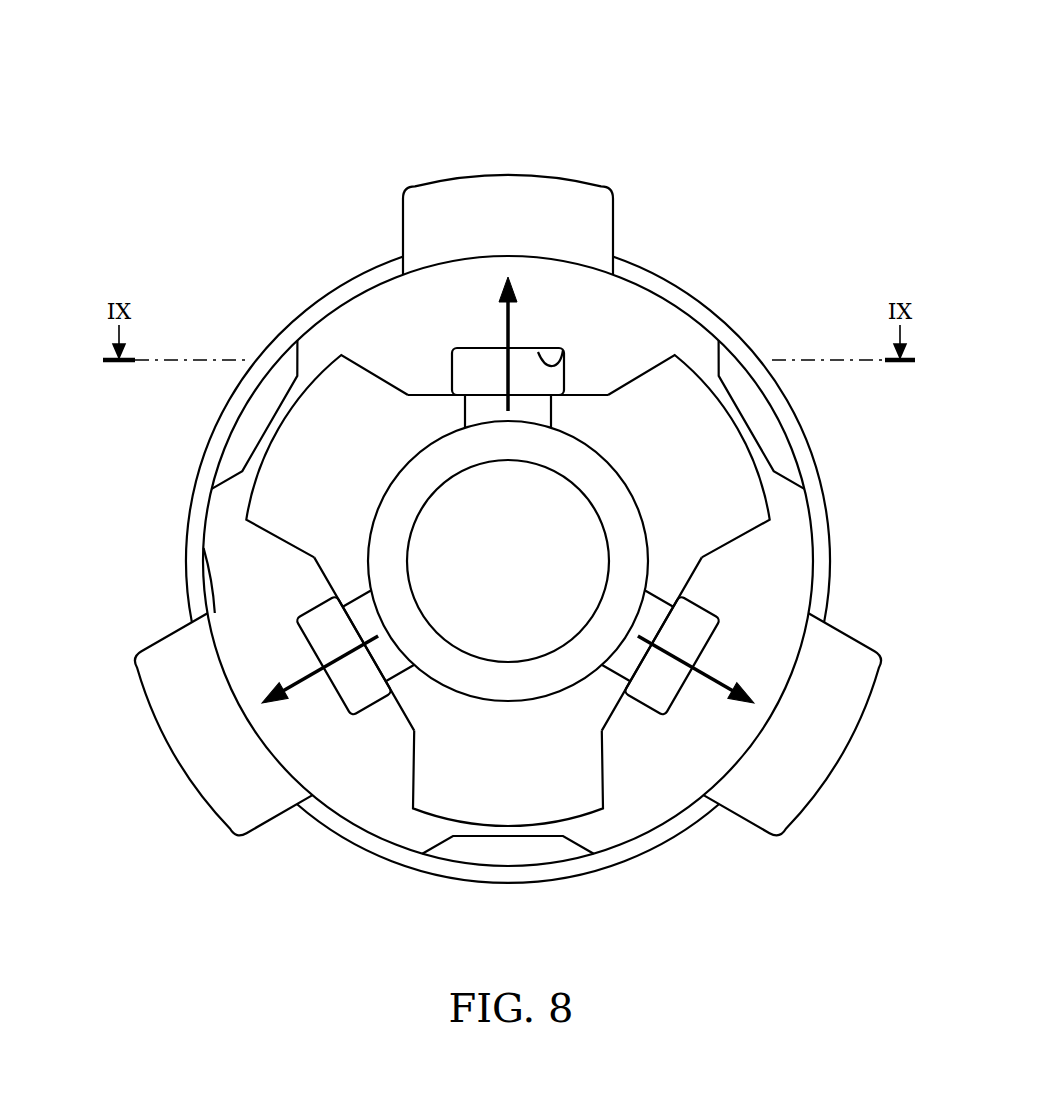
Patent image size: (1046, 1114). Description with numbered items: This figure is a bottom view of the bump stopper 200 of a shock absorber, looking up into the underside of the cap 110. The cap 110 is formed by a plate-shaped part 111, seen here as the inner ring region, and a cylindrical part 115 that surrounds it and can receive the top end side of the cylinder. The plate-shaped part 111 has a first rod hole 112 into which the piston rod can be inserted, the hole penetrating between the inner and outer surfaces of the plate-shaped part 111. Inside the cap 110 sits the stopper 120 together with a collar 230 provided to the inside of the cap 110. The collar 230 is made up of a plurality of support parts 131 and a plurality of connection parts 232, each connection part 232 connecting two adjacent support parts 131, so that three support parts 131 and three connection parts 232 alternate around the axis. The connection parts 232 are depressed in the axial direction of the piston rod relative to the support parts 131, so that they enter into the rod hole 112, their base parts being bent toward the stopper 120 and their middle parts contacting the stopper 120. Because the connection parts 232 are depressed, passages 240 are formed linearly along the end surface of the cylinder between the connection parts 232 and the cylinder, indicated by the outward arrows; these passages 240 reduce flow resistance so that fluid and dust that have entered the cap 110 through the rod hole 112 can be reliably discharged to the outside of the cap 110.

The bump stopper 200 is at (233, 108).
The cap 110 is at (185, 568).
The plate-shaped part 111 is at (232, 585).
The first rod hole 112 is at (565, 350).
The cylindrical part 115 is at (205, 497).
The stopper 120 is at (563, 447).
The support parts 131 is at (342, 385).
The collar 230 is at (249, 512).
The connection parts 232 is at (482, 405).
The passages 240 is at (483, 340).